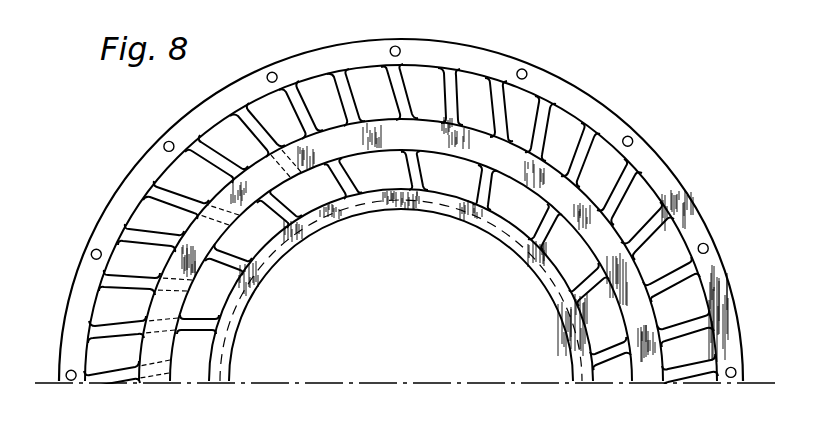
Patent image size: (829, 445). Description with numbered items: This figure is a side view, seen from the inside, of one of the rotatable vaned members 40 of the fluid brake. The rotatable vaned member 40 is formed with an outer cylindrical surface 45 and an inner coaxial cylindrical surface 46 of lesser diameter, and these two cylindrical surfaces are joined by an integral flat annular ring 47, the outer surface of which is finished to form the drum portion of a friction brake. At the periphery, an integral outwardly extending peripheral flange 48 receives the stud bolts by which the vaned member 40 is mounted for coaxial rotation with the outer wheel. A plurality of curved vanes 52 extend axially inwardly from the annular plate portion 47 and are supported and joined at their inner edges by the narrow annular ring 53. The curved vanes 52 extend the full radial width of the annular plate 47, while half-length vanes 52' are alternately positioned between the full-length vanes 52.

The rotatable vaned member 40 is at (477, 44).
The outer cylindrical surface 45 is at (217, 123).
The inner coaxial cylindrical surface 46 is at (315, 213).
The integral flat annular ring 47 is at (225, 145).
The peripheral flange 48 is at (325, 57).
The curved vanes 52 is at (377, 228).
The half-length vanes 52' is at (198, 235).
The narrow annular ring 53 is at (208, 229).